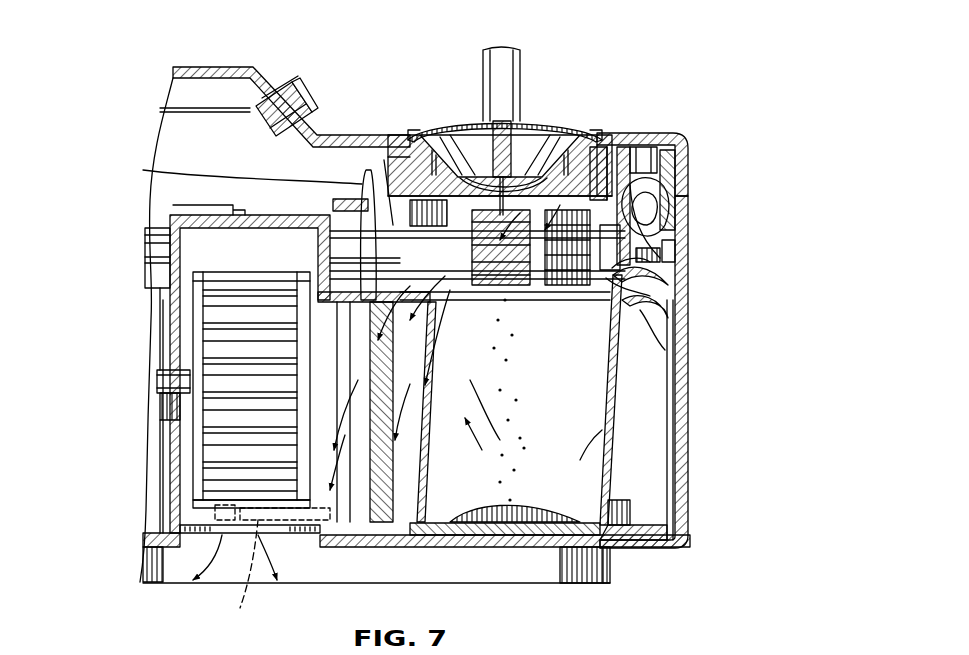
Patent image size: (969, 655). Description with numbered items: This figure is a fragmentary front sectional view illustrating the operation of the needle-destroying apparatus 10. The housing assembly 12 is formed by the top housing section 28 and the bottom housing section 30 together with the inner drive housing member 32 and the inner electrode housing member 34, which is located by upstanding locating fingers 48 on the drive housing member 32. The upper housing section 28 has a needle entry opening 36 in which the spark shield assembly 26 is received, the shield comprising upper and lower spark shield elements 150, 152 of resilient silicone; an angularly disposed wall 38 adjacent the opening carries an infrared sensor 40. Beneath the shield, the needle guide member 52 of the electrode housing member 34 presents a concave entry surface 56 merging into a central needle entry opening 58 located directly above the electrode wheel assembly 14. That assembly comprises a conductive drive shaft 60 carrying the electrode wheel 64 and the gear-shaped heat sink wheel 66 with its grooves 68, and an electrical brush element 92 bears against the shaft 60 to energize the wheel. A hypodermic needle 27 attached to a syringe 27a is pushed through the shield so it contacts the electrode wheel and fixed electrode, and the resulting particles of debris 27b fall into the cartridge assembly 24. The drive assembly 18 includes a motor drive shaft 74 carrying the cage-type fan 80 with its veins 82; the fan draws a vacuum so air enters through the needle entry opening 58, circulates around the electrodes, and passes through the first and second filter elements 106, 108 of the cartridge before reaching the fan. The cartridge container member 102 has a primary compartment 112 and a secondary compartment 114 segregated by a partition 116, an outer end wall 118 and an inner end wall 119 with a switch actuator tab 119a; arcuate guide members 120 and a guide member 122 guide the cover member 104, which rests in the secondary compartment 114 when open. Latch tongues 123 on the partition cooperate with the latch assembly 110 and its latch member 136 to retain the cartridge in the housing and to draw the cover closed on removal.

The apparatus 10 is at (95, 207).
The housing assembly 12 is at (214, 62).
The rotatable electrode wheel assembly 14 is at (615, 140).
The drive assembly 18 is at (152, 374).
The cartridge assembly 24 is at (620, 440).
The spark shield assembly 26 is at (418, 125).
The hypodermic needle 27 is at (508, 185).
The syringe 27a is at (522, 82).
The particles of debris 27b is at (565, 575).
The top housing section 28 is at (640, 150).
The bottom housing section 30 is at (605, 580).
The inner drive housing member 32 is at (160, 245).
The inner electrode housing member 34 is at (640, 205).
The needle entry opening 36 is at (412, 155).
The angularly disposed wall 38 is at (262, 98).
The infrared sensor 40 is at (302, 90).
The locating fingers 48 is at (143, 170).
The needle guide member 52 is at (684, 140).
The concave entry surface 56 is at (476, 160).
The needle entry opening 58 is at (495, 135).
The drive shaft 60 is at (366, 176).
The electrode wheel 64 is at (648, 150).
The heat sink wheel 66 is at (672, 170).
The grooves 68 is at (600, 165).
The drive shaft 74 is at (160, 388).
The fan 80 is at (210, 428).
The veins 82 is at (215, 455).
The electrical brush element 92 is at (410, 200).
The container member 102 is at (640, 545).
The cover member 104 is at (665, 305).
The first filter element 106 is at (360, 525).
The second filter element 108 is at (420, 520).
The latch assembly 110 is at (652, 226).
The primary compartment 112 is at (612, 420).
The secondary compartment 114 is at (655, 462).
The partition 116 is at (640, 500).
The outer end wall 118 is at (690, 488).
The inner end wall 119 is at (500, 522).
The switch actuator tab 119a is at (232, 575).
The arcuate guide members 120 is at (650, 288).
The guide member 122 is at (660, 330).
The latch tongues 123 is at (650, 272).
The latch member 136 is at (668, 248).
The upper spark shield element 150 is at (548, 150).
The lower spark shield element 152 is at (568, 182).